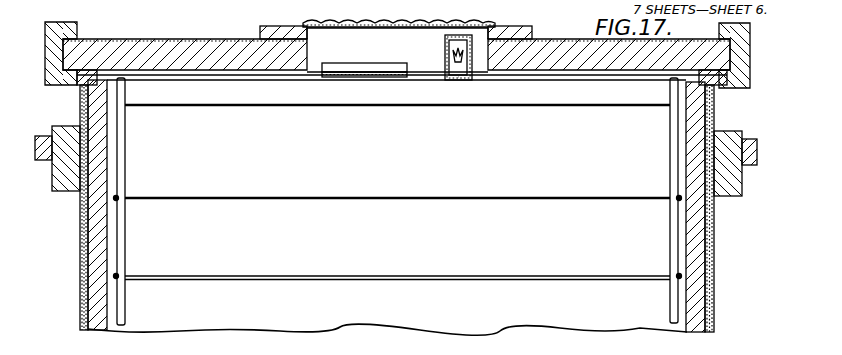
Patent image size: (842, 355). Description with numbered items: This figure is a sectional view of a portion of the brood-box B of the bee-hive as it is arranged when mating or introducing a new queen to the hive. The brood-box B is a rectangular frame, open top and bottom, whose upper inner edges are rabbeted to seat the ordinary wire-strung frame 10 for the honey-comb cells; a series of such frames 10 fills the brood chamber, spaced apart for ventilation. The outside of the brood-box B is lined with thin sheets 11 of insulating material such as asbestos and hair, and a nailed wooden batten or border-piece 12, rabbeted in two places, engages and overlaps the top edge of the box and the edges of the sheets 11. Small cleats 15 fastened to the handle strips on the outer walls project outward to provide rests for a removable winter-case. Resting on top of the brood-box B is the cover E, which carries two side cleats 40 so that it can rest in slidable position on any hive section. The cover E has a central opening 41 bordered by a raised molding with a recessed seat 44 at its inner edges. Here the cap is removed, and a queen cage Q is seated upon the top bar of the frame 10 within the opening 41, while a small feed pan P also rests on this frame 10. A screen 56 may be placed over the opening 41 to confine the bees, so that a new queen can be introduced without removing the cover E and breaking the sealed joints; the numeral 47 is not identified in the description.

The side cleat 40 is at (752, 46).
The cover E is at (752, 78).
The batten 12 is at (720, 90).
The cleat 15 is at (757, 153).
The brood-box B is at (715, 271).
The insulating sheet 11 is at (714, 313).
The frame 10 is at (493, 98).
The central opening 41 is at (425, 65).
The queen cage Q is at (460, 80).
The screen 56 is at (406, 23).
The recessed seat 44 is at (308, 29).
The block 47 is at (532, 31).
The feed pan P is at (372, 72).